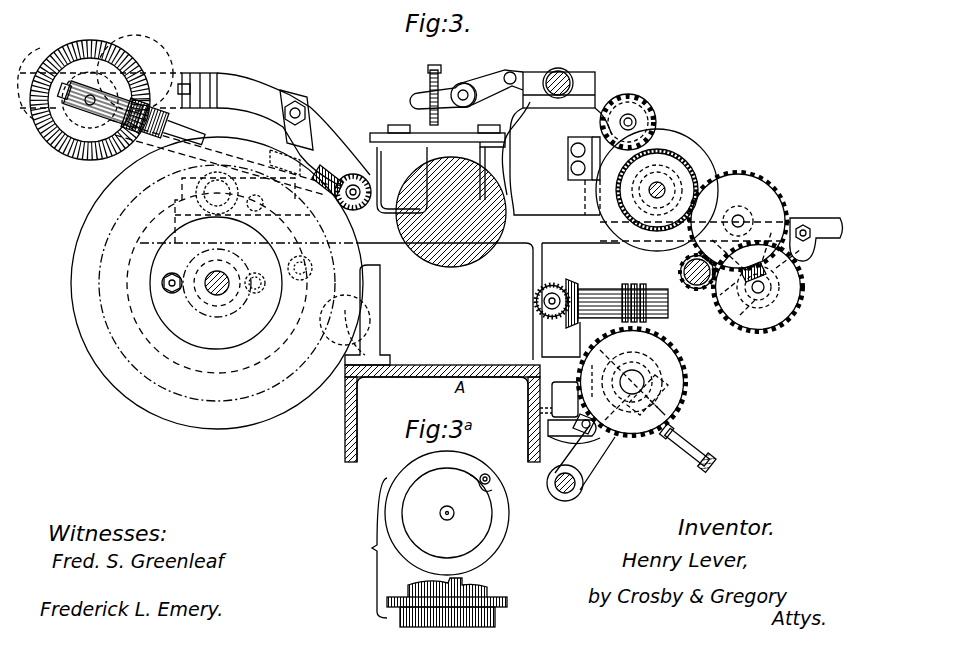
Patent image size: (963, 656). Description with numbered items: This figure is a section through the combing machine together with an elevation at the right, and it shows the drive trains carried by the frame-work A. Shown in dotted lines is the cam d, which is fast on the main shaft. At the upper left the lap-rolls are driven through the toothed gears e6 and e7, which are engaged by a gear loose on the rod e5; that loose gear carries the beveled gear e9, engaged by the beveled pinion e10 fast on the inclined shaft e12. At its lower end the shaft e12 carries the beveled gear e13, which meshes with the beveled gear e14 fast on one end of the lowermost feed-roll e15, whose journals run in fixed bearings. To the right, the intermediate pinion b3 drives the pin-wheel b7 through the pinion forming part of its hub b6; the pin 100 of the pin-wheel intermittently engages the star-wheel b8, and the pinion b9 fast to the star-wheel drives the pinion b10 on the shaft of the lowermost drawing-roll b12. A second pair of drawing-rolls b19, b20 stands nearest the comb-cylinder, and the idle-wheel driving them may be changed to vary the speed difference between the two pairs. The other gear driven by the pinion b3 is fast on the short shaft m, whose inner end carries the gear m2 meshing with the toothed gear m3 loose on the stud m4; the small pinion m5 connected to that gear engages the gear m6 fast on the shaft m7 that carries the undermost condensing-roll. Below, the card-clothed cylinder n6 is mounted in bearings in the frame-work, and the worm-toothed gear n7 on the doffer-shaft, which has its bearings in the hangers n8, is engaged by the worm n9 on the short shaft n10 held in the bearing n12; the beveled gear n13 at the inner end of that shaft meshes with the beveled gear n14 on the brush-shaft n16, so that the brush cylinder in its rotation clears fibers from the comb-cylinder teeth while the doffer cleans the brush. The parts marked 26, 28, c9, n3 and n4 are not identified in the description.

In FIG. 3, the cam d is at (216, 283).
In FIG. 3, the frame-work A is at (146, 338).
In FIG. 3, the rod e5 is at (132, 84).
In FIG. 3, the toothed gear e6 is at (84, 94).
In FIG. 3, the toothed gear e7 is at (141, 73).
In FIG. 3, the beveled gear e9 is at (69, 163).
In FIG. 3, the beveled pinion e10 is at (145, 125).
In FIG. 3, the inclined shaft e12 is at (195, 134).
In FIG. 3, the beveled gear e13 is at (327, 172).
In FIG. 3, the beveled gear e14 is at (429, 139).
In FIG. 3, the lowermost feed-roll e15 is at (369, 186).
In FIG. 3, the pivot pin 26 is at (559, 82).
In FIG. 3, the lever 28 is at (463, 168).
In FIG. 3, the bearing bracket c9 is at (360, 315).
In FIG. 3, the intermediate pinion b3 is at (692, 168).
In FIG. 3, the pin-wheel b7 is at (657, 181).
In FIG. 3A, the pin-wheel b7 is at (458, 529).
In FIG. 3, the star-wheel b8 is at (632, 116).
In FIG. 3, the pinion b9 is at (635, 82).
In FIG. 3, the pinion b10 is at (570, 166).
In FIG. 3, the lowermost drawing-roll b12 is at (572, 197).
In FIG. 3, the lowermost drawing-roll b19 is at (562, 166).
In FIG. 3, the drawing-roll b20 is at (566, 158).
In FIG. 3, the short shaft m is at (697, 281).
In FIG. 3, the gear m2 is at (669, 263).
In FIG. 3, the toothed gear m3 is at (757, 288).
In FIG. 3, the stud m4 is at (799, 289).
In FIG. 3, the small pinion m5 is at (806, 227).
In FIG. 3, the gear m6 is at (705, 312).
In FIG. 3, the shaft m7 is at (751, 220).
In FIG. 3, the arm n3 is at (587, 452).
In FIG. 3, the pivot n4 is at (566, 490).
In FIG. 3, the card-clothed cylinder n6 is at (632, 366).
In FIG. 3, the worm-toothed gear n7 is at (644, 382).
In FIG. 3, the hangers n8 is at (687, 447).
In FIG. 3, the worm n9 is at (634, 295).
In FIG. 3, the short shaft n10 is at (678, 327).
In FIG. 3, the bearing n12 is at (623, 293).
In FIG. 3, the beveled gear n13 is at (579, 290).
In FIG. 3, the beveled gear n14 is at (522, 278).
In FIG. 3, the brush-shaft n16 is at (535, 301).
In FIG. 3A, the pin 100 is at (465, 551).
In FIG. 3A, the hub b6 is at (457, 583).